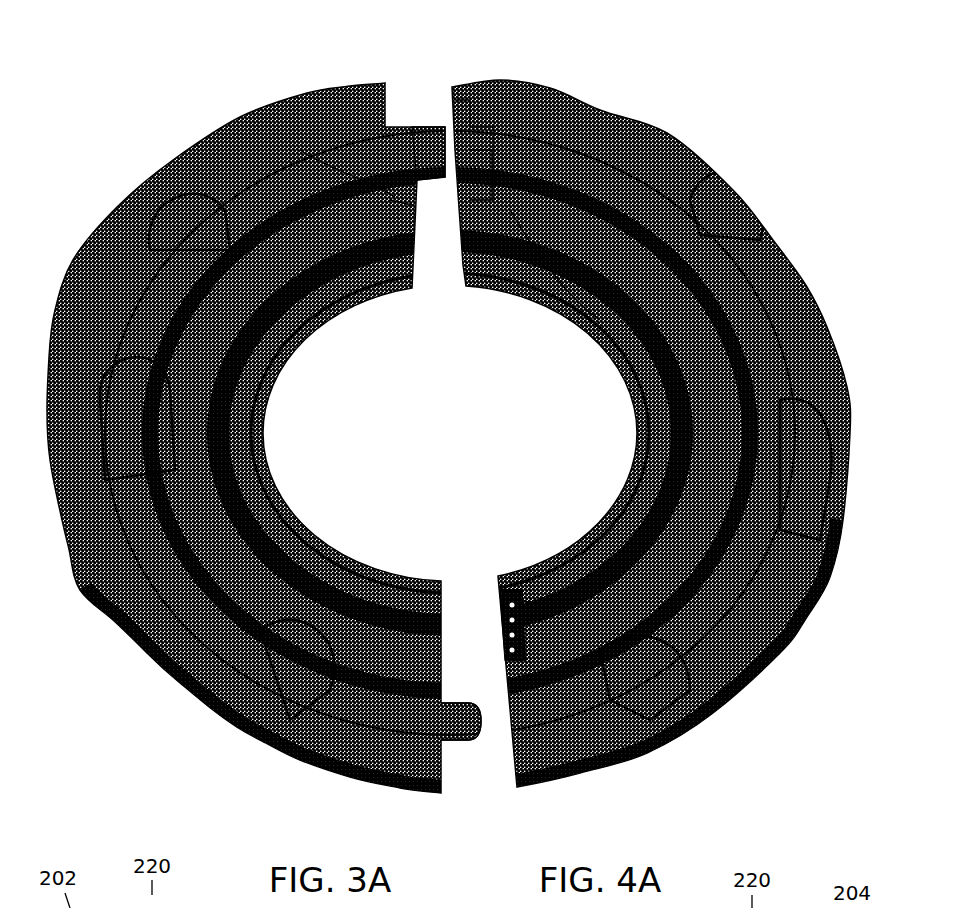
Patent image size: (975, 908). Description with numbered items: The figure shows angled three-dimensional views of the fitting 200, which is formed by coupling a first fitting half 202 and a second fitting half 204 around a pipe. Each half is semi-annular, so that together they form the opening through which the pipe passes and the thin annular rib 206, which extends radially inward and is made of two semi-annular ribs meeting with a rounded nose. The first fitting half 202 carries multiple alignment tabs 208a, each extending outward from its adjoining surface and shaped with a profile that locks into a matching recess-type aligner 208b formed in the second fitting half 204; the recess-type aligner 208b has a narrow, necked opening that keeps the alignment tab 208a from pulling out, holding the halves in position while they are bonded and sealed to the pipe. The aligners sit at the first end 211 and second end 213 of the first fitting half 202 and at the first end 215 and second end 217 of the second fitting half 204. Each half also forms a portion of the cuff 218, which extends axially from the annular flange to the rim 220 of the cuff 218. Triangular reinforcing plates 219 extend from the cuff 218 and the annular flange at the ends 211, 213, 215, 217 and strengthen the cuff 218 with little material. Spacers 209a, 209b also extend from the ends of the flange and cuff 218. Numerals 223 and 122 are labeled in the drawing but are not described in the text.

In FIG. 4A, the fitting 200 is at (771, 88).
In FIG. 3A, the first fitting half 202 is at (127, 122).
In FIG. 4A, the second fitting half 204 is at (788, 160).
In FIG. 3A, the thin annular rib 206 is at (590, 547).
In FIG. 3A, the alignment tab 208a is at (430, 127).
In FIG. 4A, the recess-type aligner 208b is at (493, 127).
In FIG. 4A, the spacer 209a is at (480, 177).
In FIG. 4A, the spacer 209b is at (491, 588).
In FIG. 3A, the first end of the first fitting half 211 is at (400, 203).
In FIG. 3A, the second end of the first fitting half 213 is at (440, 760).
In FIG. 4A, the first end of the second fitting half 215 is at (457, 73).
In FIG. 4A, the second end of the second fitting half 217 is at (533, 773).
In FIG. 3A, the cuff 218 is at (745, 355).
In FIG. 3A, the reinforcing plate 219 is at (390, 195).
In FIG. 4A, the reinforcing plate 219 is at (493, 203).
In FIG. 3A, the rim 220 is at (748, 425).
In FIG. 3A, the lug 223 is at (117, 433).
In FIG. 4A, the lug 223 is at (826, 405).
In FIG. 3A, the split line 122 is at (444, 68).
In FIG. 4A, the split line 122 is at (583, 351).